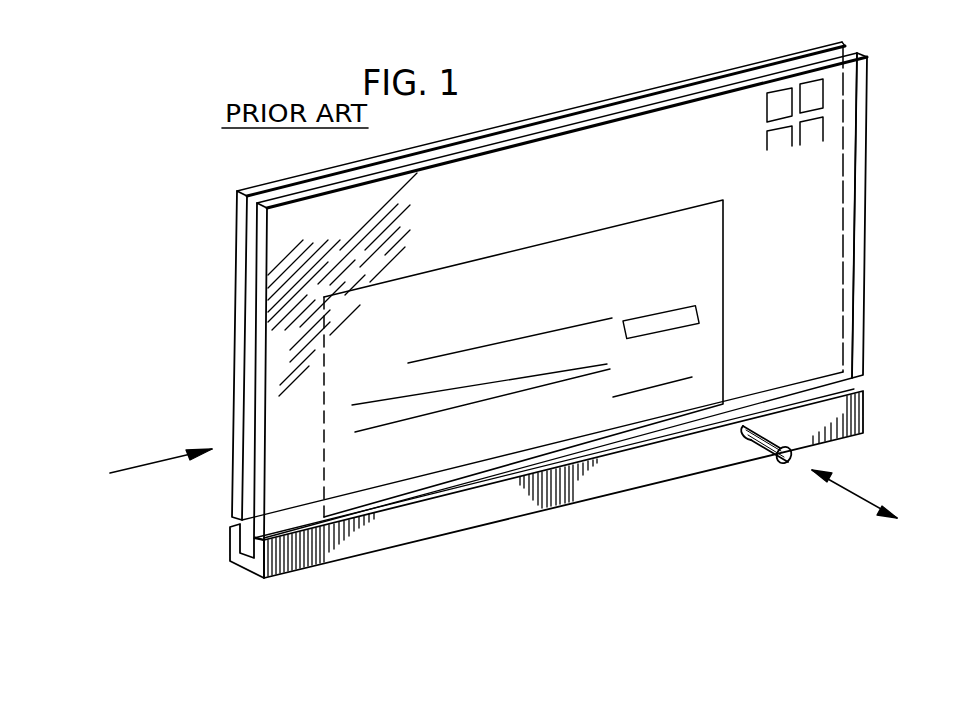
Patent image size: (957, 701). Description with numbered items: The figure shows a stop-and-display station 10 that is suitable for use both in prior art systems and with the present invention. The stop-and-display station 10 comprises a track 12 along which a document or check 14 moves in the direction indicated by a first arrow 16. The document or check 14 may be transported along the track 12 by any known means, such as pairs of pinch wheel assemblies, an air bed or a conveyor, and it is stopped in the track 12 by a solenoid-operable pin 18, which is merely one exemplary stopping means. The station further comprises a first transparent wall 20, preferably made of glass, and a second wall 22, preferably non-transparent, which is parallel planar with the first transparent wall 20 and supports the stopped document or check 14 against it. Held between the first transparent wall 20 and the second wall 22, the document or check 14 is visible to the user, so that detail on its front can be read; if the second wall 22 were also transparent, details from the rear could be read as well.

The stop-and-display station 10 is at (915, 255).
The track 12 is at (533, 502).
The document or check 14 is at (450, 267).
The first arrow 16 is at (161, 460).
The solenoid-operable pin 18 is at (767, 459).
The first transparent wall 20 is at (862, 55).
The second wall 22 is at (843, 45).